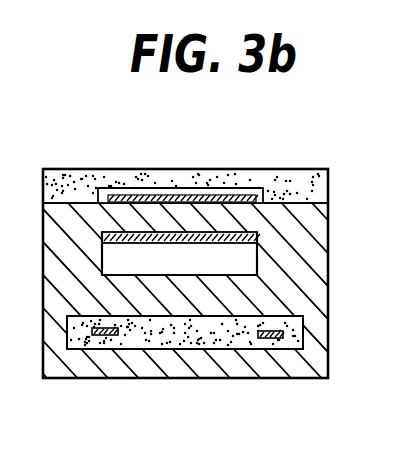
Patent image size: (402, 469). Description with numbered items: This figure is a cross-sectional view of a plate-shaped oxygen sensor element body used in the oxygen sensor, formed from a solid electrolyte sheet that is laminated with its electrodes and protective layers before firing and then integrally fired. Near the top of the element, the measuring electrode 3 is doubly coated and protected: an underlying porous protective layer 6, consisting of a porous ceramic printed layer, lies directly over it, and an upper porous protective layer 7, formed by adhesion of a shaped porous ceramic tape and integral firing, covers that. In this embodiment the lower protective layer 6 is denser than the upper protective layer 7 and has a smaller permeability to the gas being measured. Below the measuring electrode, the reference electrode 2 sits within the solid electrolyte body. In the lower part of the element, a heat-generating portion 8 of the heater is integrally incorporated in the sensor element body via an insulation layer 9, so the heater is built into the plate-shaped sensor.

The reference electrode 2 is at (236, 243).
The measuring electrode 3 is at (198, 190).
The underlying porous protective layer 6 is at (322, 191).
The upper porous protective layer 7 is at (306, 192).
The heat-generating portion 8 is at (283, 338).
The insulation layer 9 is at (183, 343).